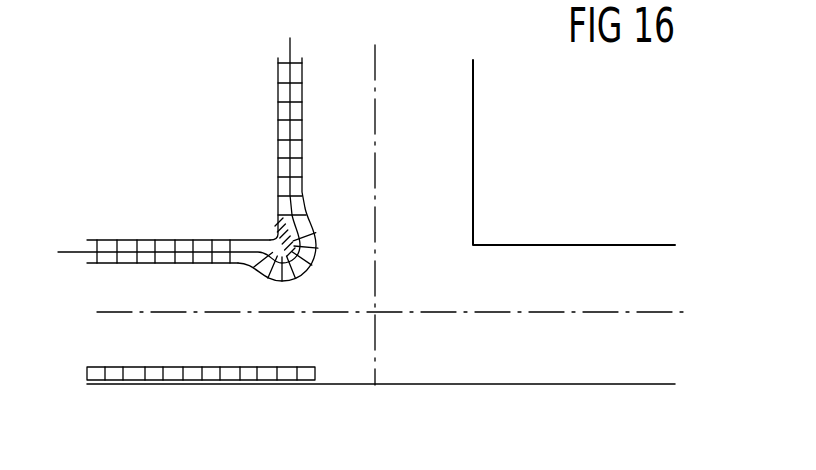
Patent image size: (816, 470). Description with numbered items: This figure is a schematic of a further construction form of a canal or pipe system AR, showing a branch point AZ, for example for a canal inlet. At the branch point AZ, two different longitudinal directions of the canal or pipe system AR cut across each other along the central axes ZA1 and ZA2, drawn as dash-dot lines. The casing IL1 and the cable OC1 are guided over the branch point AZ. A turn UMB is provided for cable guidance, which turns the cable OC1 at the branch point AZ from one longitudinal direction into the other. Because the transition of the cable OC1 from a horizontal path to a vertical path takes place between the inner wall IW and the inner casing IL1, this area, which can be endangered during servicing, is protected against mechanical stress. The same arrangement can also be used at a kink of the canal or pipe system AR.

The inner wall IW is at (102, 224).
The cable OC1 is at (77, 263).
The casing IL1 is at (318, 198).
The turn UMB is at (264, 233).
The central axis ZA2 is at (380, 65).
The branch point AZ is at (534, 198).
The central axis ZA1 is at (608, 313).
The canal or pipe system AR is at (540, 366).